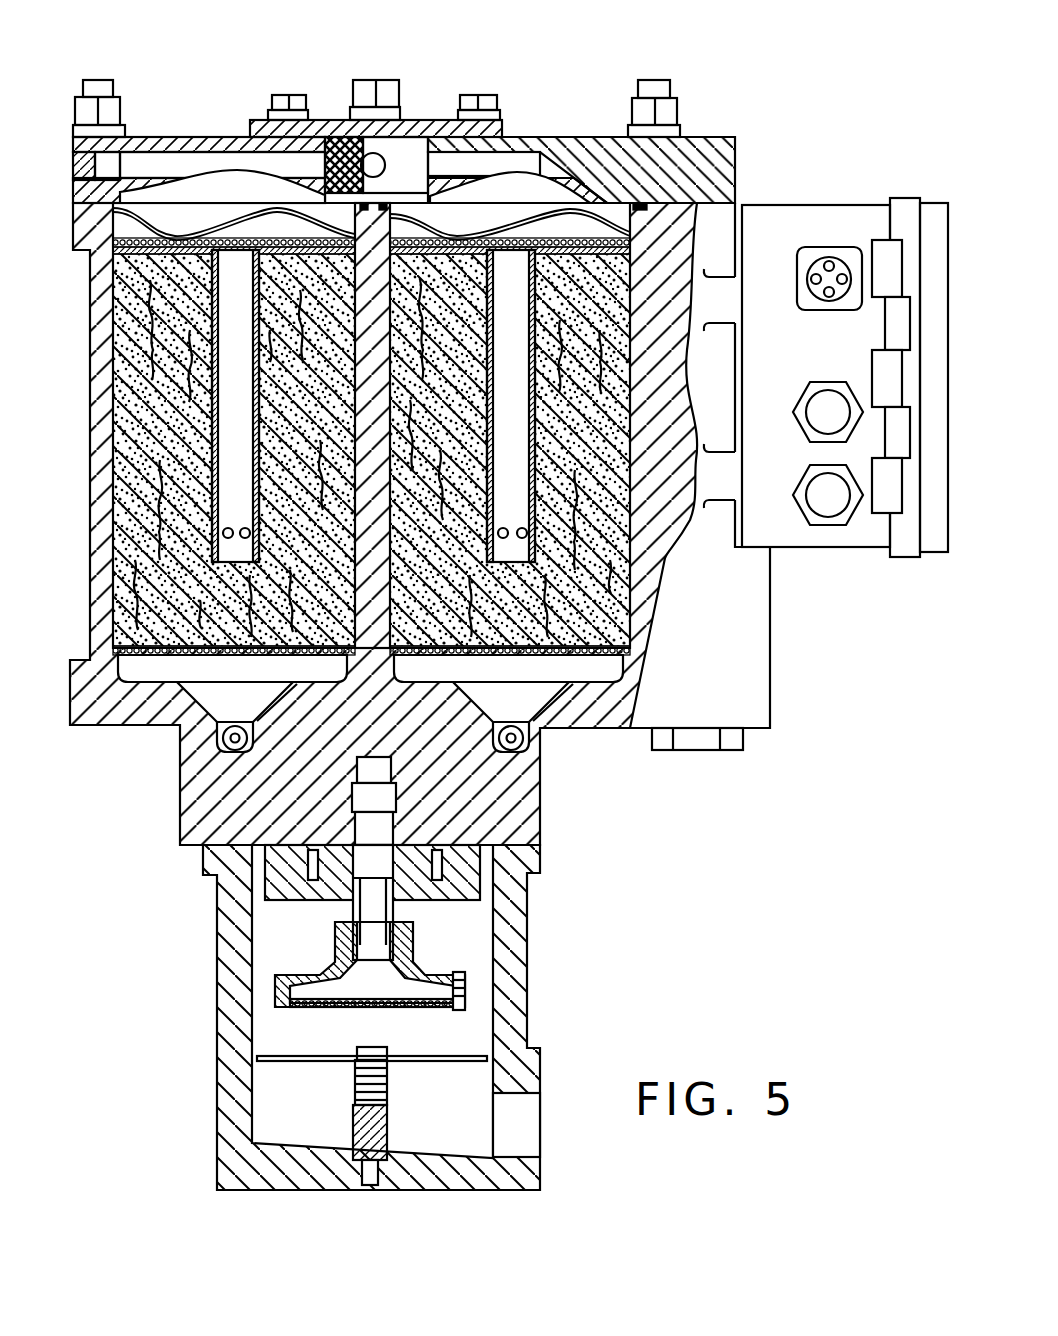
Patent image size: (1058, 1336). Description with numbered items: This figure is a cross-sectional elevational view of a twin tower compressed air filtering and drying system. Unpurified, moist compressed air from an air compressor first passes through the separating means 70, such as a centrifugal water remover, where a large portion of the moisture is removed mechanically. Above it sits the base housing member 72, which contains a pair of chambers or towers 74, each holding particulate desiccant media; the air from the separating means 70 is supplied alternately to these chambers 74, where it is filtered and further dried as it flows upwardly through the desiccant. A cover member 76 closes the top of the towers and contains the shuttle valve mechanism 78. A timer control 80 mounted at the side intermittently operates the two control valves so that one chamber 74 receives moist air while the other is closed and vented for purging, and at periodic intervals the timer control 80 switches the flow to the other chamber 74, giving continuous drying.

The separating means 70 is at (226, 971).
The base housing member 72 is at (203, 786).
The chambers or towers 74 is at (125, 433).
The cover member 76 is at (573, 137).
The shuttle valve mechanism 78 is at (343, 143).
The timer control 80 is at (783, 190).